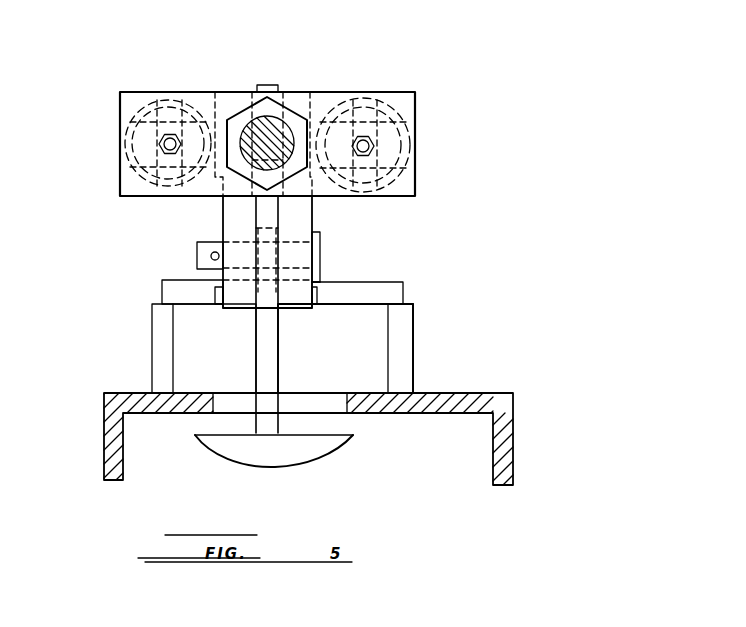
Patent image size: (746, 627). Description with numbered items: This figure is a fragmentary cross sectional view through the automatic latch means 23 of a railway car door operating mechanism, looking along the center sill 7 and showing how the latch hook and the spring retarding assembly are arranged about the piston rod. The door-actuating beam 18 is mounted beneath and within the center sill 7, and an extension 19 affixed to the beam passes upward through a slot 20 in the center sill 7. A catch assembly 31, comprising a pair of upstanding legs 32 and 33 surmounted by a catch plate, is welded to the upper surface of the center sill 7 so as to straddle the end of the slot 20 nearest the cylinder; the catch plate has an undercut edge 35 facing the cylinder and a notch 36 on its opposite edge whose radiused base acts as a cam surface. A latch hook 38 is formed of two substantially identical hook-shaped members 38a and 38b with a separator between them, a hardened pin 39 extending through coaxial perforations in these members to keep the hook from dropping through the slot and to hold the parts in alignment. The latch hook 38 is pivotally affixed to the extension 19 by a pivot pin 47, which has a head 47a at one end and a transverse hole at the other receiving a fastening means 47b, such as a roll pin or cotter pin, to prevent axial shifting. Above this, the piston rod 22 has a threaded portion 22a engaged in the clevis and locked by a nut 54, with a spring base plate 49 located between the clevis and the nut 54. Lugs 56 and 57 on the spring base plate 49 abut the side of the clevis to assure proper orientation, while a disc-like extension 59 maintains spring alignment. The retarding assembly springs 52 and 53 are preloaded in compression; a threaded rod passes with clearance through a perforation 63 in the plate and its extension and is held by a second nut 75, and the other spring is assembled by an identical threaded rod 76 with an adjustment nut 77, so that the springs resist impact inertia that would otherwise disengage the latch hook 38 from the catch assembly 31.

The center sill 7 is at (515, 445).
The door-actuating beam 18 is at (300, 453).
The extension 19 is at (279, 378).
The slot 20 is at (347, 402).
The piston rod 22 is at (305, 112).
The threaded portion of piston rod 22a is at (263, 85).
The automatic latch means 23 is at (371, 148).
The catch assembly 31 is at (428, 333).
The upstanding leg 32 is at (413, 378).
The upstanding leg 33 is at (152, 335).
The undercut edge of catch plate 35 is at (372, 295).
The notch 36 is at (397, 282).
The latch hook 38 is at (298, 208).
The hook-shaped member 38a is at (293, 305).
The hook-shaped member 38b is at (228, 313).
The hardened pin 39 is at (217, 292).
The pivot pin 47 is at (321, 247).
The head of pivot pin 47a is at (321, 272).
The fastening means 47b is at (211, 256).
The spring base plate 49 is at (118, 101).
The spring 52 is at (390, 92).
The spring 53 is at (168, 92).
The nut 54 is at (288, 108).
The lug 56 is at (214, 92).
The lug 57 is at (206, 196).
The disc-like extension 59 is at (135, 92).
The perforation 63 is at (410, 123).
The second nut 75 is at (372, 152).
The threaded rod 76 is at (163, 143).
The adjustment nut 77 is at (163, 150).